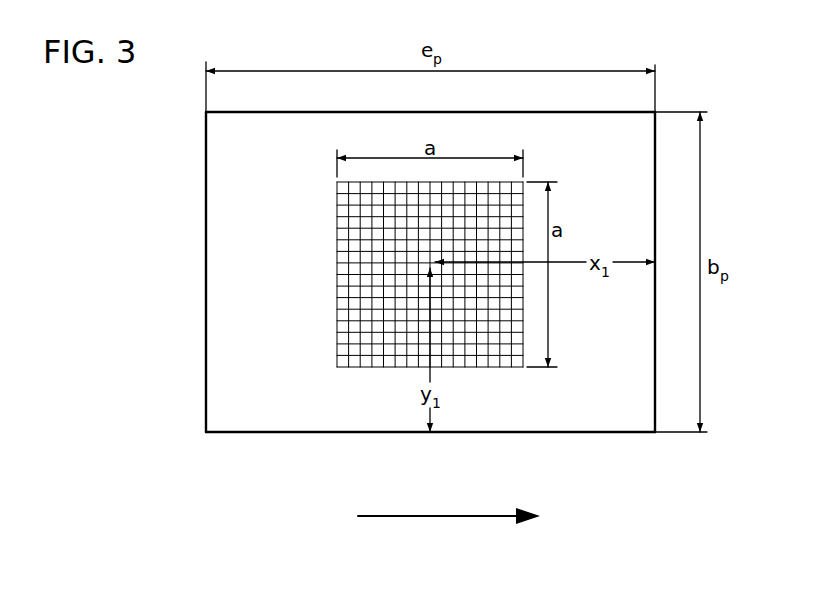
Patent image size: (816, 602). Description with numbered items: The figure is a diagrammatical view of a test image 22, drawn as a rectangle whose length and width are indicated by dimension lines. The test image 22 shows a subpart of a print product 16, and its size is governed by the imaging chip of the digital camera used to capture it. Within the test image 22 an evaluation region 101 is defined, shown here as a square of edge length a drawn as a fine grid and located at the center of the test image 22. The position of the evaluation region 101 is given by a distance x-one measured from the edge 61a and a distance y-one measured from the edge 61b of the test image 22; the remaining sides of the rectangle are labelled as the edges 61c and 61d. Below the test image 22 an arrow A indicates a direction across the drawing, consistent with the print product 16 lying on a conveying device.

The print product 16 is at (440, 249).
The edge of the test image 61a is at (671, 207).
The edge of the test image 61b is at (467, 448).
The left edge of panel 61c is at (194, 266).
The top edge of panel 61d is at (478, 100).
The test image 22 is at (627, 421).
The evaluation region 101 is at (368, 367).
The direction arrow A is at (428, 517).